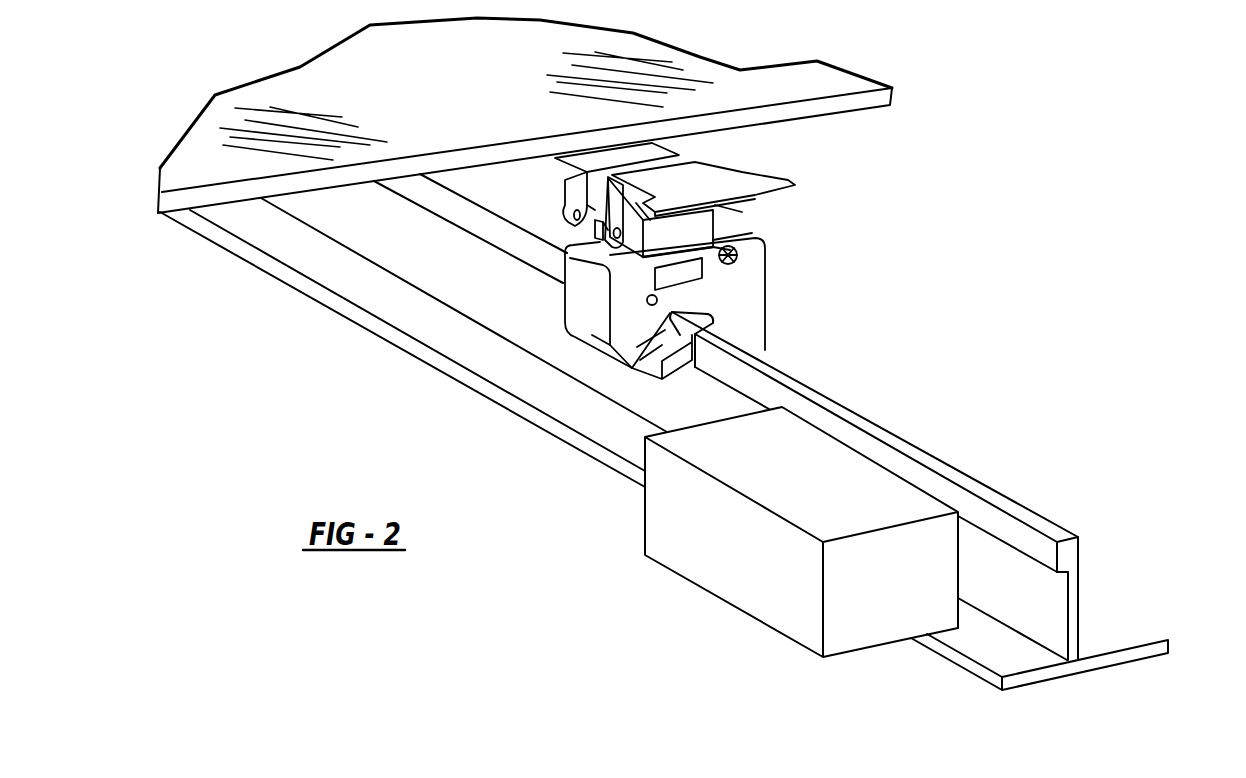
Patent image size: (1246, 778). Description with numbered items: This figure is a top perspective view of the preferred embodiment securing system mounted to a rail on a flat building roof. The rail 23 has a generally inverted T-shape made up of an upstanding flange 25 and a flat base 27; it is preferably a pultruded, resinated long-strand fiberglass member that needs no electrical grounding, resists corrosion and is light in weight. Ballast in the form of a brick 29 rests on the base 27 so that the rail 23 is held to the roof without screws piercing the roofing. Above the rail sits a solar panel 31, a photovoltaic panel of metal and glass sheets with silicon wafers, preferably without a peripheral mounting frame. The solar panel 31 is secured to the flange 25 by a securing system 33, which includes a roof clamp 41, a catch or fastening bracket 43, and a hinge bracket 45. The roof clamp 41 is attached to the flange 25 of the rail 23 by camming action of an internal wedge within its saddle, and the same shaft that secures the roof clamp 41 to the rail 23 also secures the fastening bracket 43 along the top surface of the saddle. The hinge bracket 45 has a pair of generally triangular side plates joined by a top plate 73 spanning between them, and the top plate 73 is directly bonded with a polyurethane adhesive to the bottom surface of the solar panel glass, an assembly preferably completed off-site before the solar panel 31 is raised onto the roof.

The rail 23 is at (498, 358).
The upstanding flange 25 is at (912, 442).
The flat base 27 is at (1103, 637).
The brick 29 is at (733, 572).
The solar panel 31 is at (446, 94).
The securing system 33 is at (852, 240).
The roof clamp 41 is at (745, 305).
The fastening bracket 43 is at (693, 235).
The hinge bracket 45 is at (568, 182).
The top plate 73 is at (707, 182).